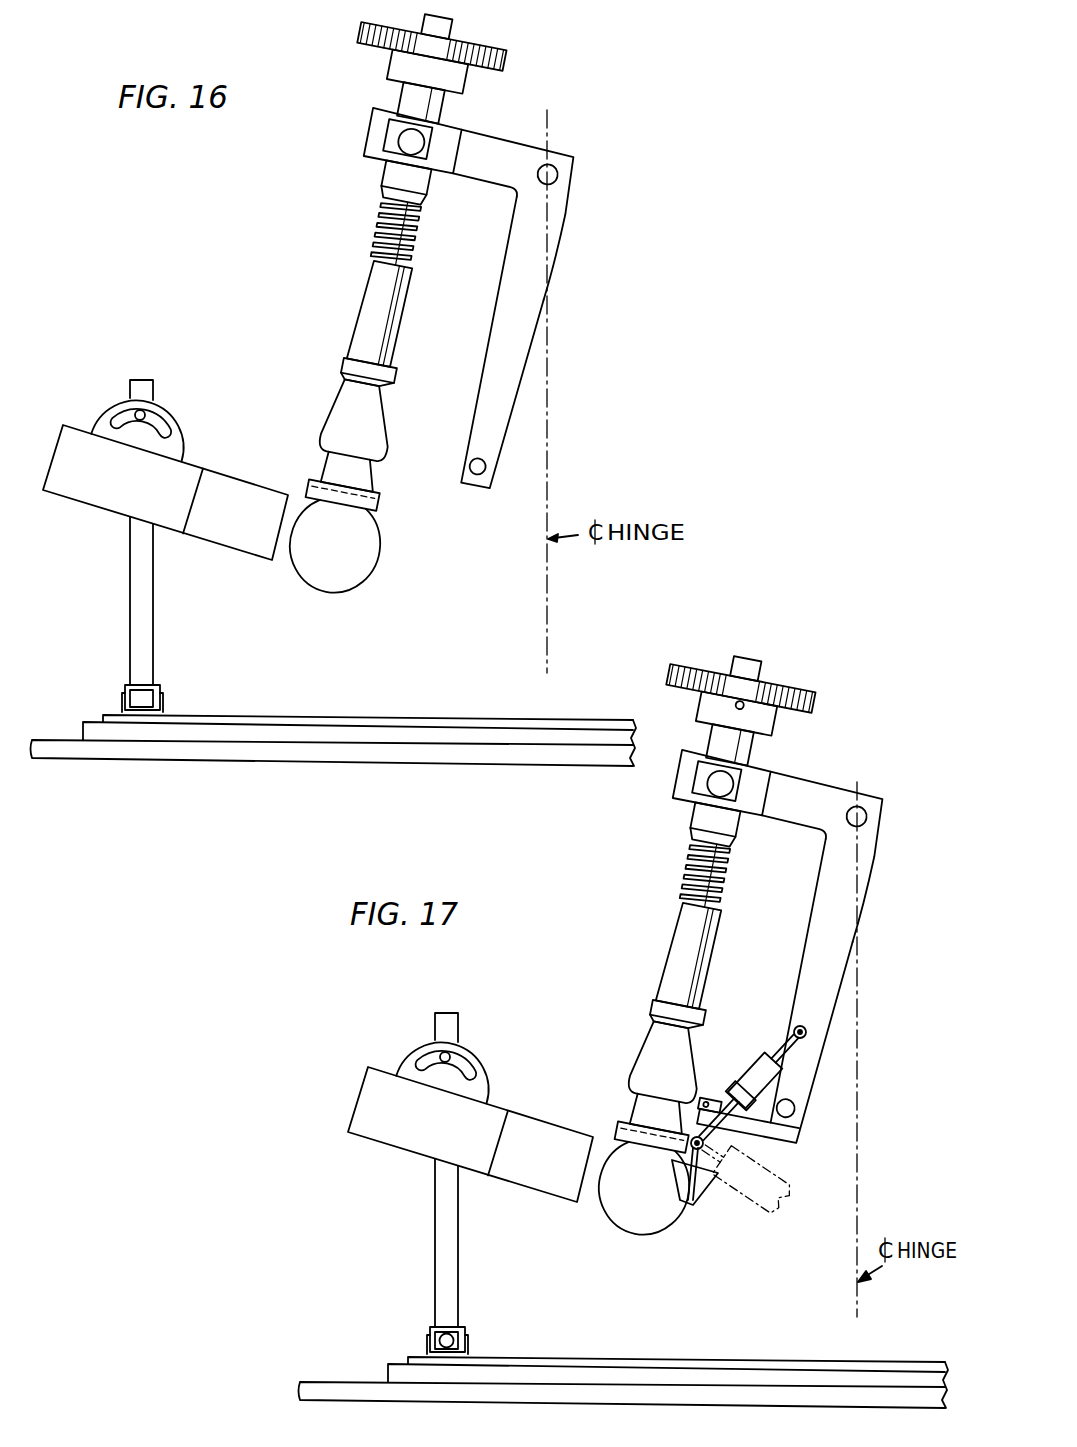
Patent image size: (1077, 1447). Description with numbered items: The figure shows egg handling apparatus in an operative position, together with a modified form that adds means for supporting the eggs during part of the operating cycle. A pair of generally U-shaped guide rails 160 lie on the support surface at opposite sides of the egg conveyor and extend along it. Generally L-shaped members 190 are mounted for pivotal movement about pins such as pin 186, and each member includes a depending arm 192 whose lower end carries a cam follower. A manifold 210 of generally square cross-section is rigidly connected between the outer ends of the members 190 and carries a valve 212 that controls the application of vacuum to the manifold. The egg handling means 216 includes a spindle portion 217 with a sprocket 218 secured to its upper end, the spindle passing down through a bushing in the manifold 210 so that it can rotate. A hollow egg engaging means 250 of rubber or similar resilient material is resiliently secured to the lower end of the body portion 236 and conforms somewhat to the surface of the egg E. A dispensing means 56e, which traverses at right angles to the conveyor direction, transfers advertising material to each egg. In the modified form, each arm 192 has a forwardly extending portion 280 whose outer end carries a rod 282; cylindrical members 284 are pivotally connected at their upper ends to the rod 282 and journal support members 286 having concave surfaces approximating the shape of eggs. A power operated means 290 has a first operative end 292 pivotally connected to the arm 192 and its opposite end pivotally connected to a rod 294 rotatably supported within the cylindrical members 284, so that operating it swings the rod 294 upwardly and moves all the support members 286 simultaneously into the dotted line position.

In FIG. 16, the dispensing means 56e is at (104, 391).
In FIG. 17, the dispensing means 56e is at (434, 1020).
In FIG. 16, the guide rails 160 is at (438, 735).
In FIG. 17, the guide rails 160 is at (806, 1377).
In FIG. 17, the pin 186 is at (866, 820).
In FIG. 16, the members 190 is at (497, 147).
In FIG. 17, the members 190 is at (795, 788).
In FIG. 16, the depending arms 192 is at (525, 316).
In FIG. 17, the depending arms 192 is at (832, 957).
In FIG. 17, the manifold 210 is at (686, 750).
In FIG. 17, the valve 212 is at (710, 789).
In FIG. 16, the egg handling means 216 is at (324, 228).
In FIG. 17, the egg handling means 216 is at (628, 907).
In FIG. 16, the spindle portion 217 is at (447, 27).
In FIG. 17, the spindle portion 217 is at (760, 671).
In FIG. 16, the sprocket 218 is at (507, 53).
In FIG. 17, the body portion 236 is at (677, 962).
In FIG. 16, the egg engaging means 250 is at (333, 417).
In FIG. 17, the egg engaging means 250 is at (637, 1063).
In FIG. 17, the forwardly extending portion 280 is at (739, 1078).
In FIG. 17, the rod 282 is at (711, 1100).
In FIG. 17, the cylindrical members 284 is at (720, 1170).
In FIG. 17, the support members 286 is at (697, 1190).
In FIG. 17, the power operated means 290 is at (762, 1072).
In FIG. 17, the first operative end 292 is at (807, 1032).
In FIG. 17, the rod 294 is at (690, 1139).
In FIG. 16, the egg E is at (313, 583).
In FIG. 17, the egg E is at (614, 1228).